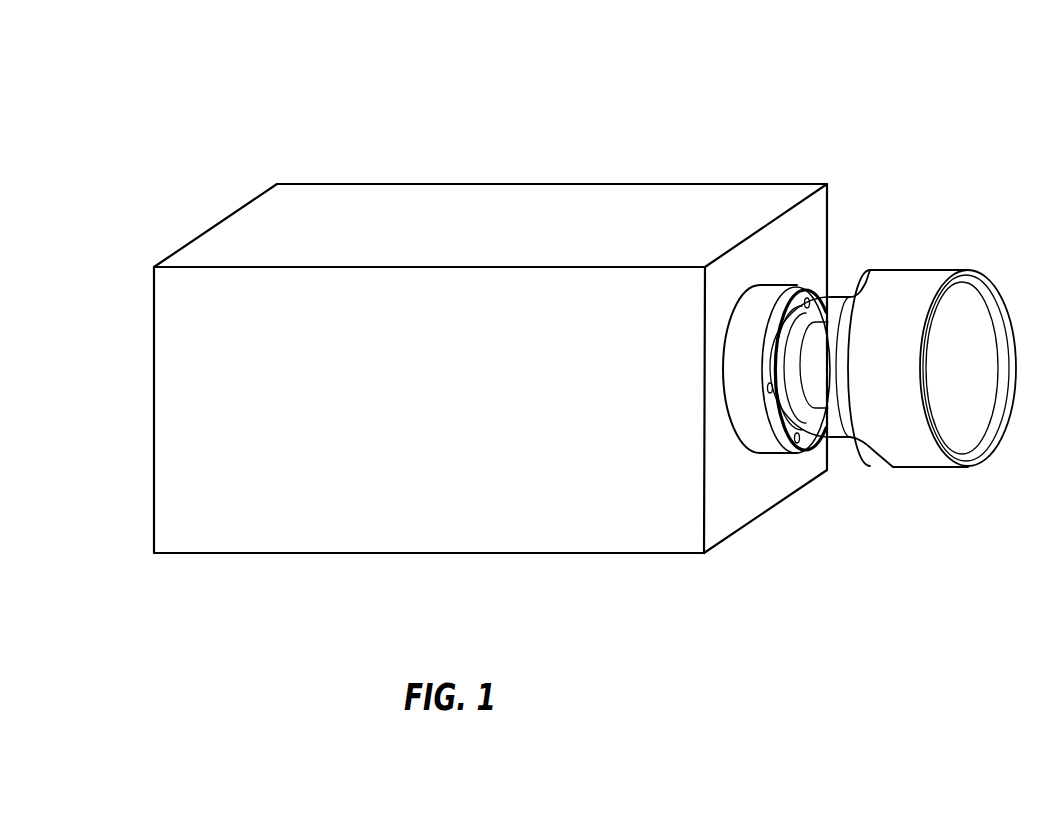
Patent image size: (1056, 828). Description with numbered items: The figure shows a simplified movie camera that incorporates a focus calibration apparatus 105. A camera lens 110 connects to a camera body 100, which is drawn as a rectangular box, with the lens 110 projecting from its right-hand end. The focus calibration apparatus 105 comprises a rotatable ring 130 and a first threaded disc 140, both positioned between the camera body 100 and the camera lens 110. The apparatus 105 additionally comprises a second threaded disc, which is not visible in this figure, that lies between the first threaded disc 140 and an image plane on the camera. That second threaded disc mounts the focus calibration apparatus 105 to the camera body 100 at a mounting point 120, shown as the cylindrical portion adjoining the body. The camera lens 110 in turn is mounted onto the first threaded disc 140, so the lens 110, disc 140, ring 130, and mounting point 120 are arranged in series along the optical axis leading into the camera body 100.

The camera body 100 is at (557, 143).
The focus calibration apparatus 105 is at (829, 283).
The camera lens 110 is at (925, 273).
The mounting point 120 is at (740, 445).
The rotatable ring 130 is at (770, 449).
The first threaded disc 140 is at (826, 450).